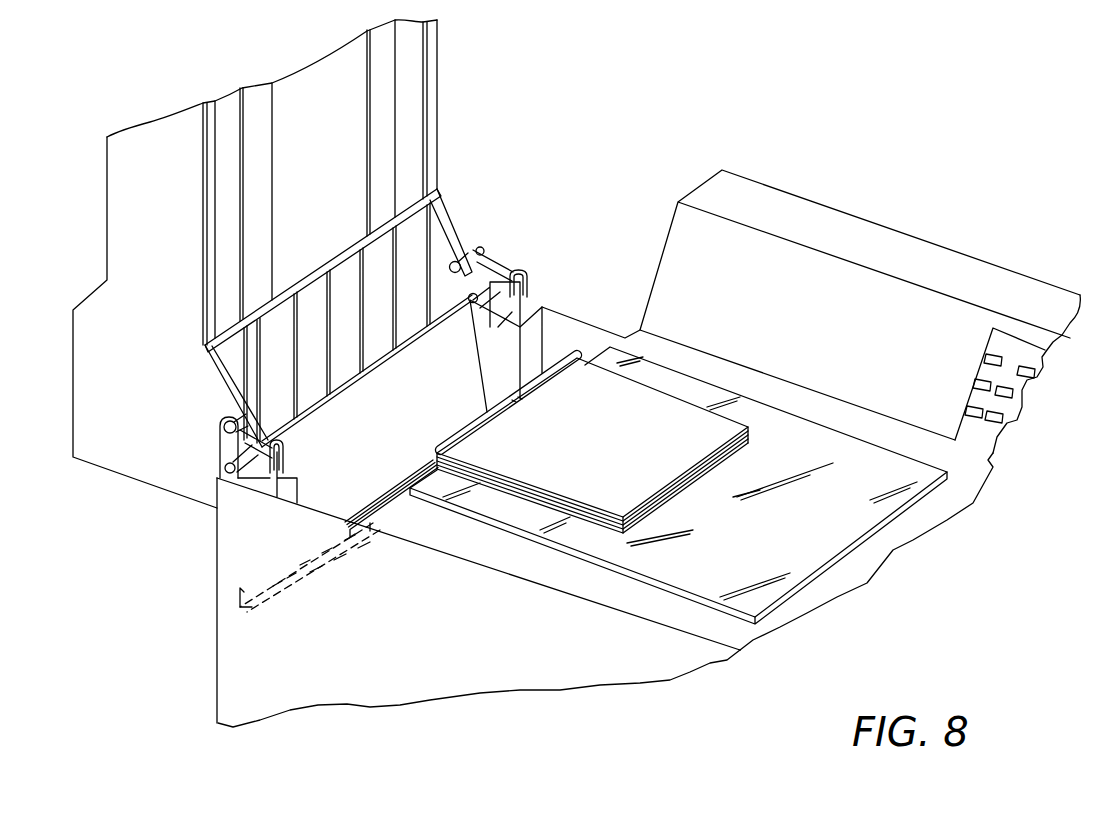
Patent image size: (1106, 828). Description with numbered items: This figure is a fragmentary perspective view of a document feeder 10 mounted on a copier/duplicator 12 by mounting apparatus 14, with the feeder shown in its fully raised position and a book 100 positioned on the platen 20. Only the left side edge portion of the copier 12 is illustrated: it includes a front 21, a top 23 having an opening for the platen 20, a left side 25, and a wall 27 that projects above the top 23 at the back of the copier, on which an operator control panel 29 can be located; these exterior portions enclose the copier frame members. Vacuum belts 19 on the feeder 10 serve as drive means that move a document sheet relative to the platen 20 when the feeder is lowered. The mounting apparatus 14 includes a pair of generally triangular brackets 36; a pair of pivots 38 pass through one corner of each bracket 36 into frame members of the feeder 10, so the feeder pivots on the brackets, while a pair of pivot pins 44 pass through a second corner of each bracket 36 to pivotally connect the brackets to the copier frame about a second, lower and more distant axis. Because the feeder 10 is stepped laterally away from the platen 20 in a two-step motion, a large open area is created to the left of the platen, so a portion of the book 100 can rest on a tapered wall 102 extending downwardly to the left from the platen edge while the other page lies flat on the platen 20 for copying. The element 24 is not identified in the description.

The document feeder 10 is at (88, 193).
The vacuum belts 19 is at (375, 127).
The mounting apparatus 14 is at (201, 481).
The brackets 36 is at (505, 259).
The pivots 38 is at (454, 262).
The pivot pins 44 is at (468, 303).
The support post 24 is at (492, 367).
The book 100 is at (612, 445).
The platen 20 is at (787, 535).
The wall 27 is at (853, 240).
The operator control panel 29 is at (1013, 360).
The top 23 is at (885, 554).
The copier/duplicator 12 is at (208, 640).
The front 21 is at (412, 653).
The left side 25 is at (218, 690).
The tapered wall 102 is at (258, 600).